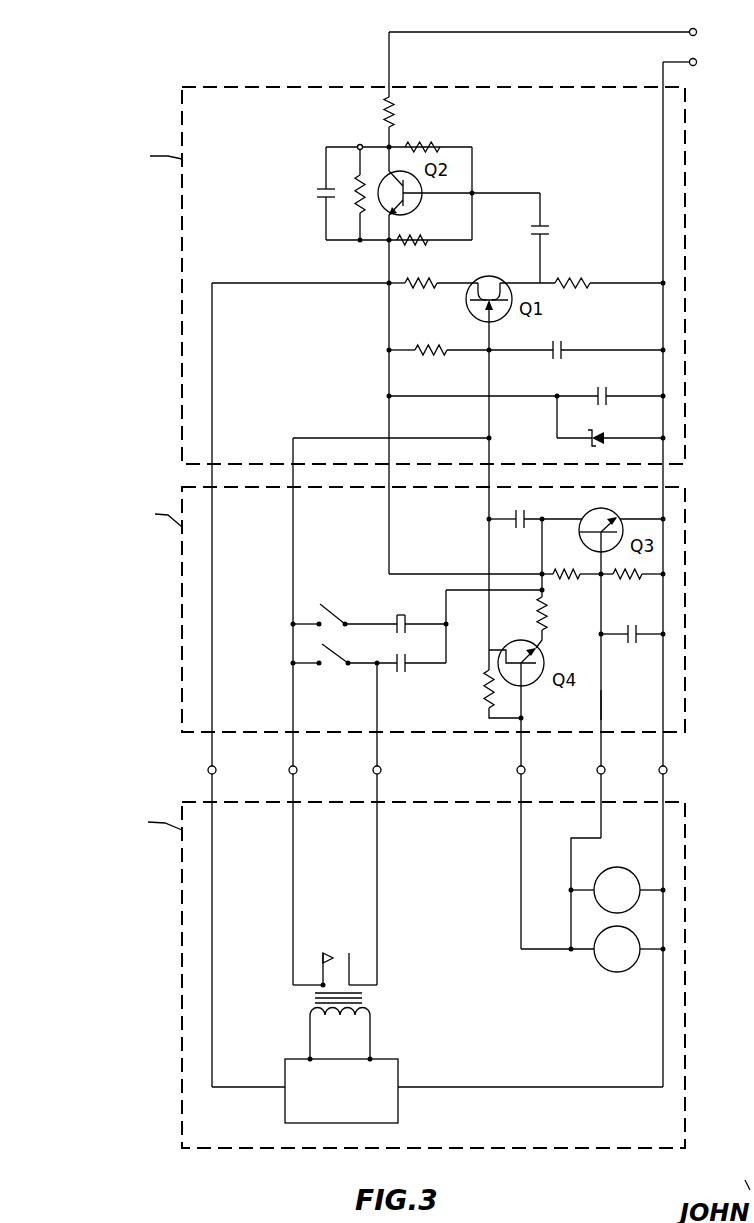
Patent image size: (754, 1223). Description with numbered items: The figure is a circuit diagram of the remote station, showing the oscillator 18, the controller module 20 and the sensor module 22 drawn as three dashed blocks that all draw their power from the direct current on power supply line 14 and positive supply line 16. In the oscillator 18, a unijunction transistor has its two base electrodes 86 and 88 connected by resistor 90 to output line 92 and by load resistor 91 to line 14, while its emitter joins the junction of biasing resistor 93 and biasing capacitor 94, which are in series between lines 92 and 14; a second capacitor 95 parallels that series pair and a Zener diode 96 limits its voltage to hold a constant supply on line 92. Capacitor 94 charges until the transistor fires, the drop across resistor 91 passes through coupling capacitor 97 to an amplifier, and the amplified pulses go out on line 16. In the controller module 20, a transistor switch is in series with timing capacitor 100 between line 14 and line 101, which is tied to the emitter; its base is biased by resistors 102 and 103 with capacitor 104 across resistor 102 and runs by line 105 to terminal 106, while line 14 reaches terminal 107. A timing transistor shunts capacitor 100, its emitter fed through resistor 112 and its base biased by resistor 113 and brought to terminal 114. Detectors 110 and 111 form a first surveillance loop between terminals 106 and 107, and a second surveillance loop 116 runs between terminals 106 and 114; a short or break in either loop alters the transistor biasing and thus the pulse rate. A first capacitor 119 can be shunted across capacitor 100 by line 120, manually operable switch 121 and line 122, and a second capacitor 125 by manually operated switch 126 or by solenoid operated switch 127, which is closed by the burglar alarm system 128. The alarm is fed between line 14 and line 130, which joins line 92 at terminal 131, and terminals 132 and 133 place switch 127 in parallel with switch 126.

The power supply line 14 is at (663, 66).
The positive supply line 16 is at (650, 32).
The oscillator 18 is at (180, 263).
The controller module 20 is at (180, 600).
The sensor module 22 is at (180, 955).
The base electrode 86 is at (472, 289).
The base electrode 88 is at (500, 284).
The resistor 90 is at (423, 290).
The load resistor 91 is at (580, 290).
The output line 92 is at (386, 260).
The biasing resistor 93 is at (432, 357).
The biasing capacitor 94 is at (551, 360).
The second capacitor 95 is at (609, 389).
The Zener diode 96 is at (606, 440).
The coupling capacitor 97 is at (548, 232).
The timing capacitor 100 is at (520, 529).
The line 101 is at (487, 510).
The resistor 102 is at (630, 580).
The resistor 103 is at (568, 580).
The capacitor 104 is at (632, 644).
The line 105 is at (603, 708).
The terminal 106 is at (597, 770).
The terminal 107 is at (667, 770).
The detector 110 is at (617, 867).
The detector 111 is at (618, 972).
The resistor 112 is at (546, 624).
The bias resistor 113 is at (481, 694).
The terminal 114 is at (517, 770).
The second surveillance loop 116 is at (521, 858).
The first capacitor 119 is at (401, 614).
The line 120 is at (291, 554).
The manually operable switch 121 is at (337, 612).
The line 122 is at (504, 593).
The second capacitor 125 is at (400, 675).
The manually operated switch 126 is at (334, 672).
The solenoid operated switch 127 is at (340, 950).
The burglar alarm system 128 is at (390, 1058).
The line 130 is at (212, 925).
The terminal 131 is at (208, 770).
The terminal 132 is at (289, 770).
The terminal 133 is at (373, 770).